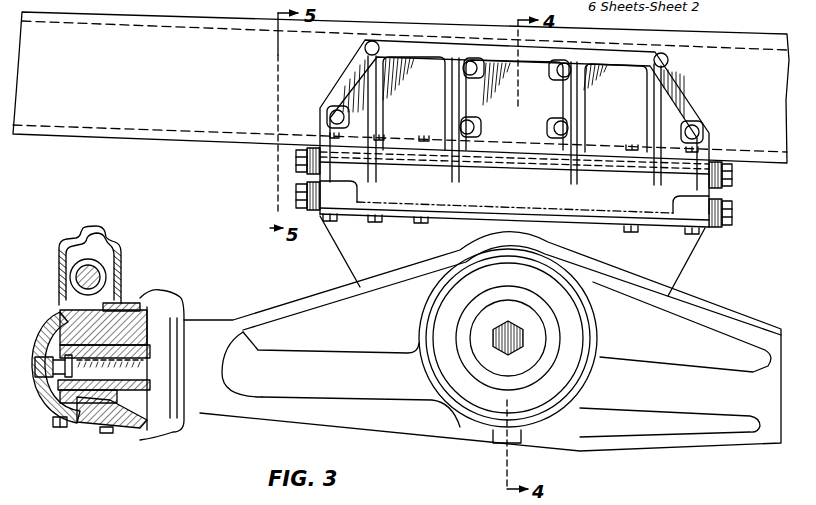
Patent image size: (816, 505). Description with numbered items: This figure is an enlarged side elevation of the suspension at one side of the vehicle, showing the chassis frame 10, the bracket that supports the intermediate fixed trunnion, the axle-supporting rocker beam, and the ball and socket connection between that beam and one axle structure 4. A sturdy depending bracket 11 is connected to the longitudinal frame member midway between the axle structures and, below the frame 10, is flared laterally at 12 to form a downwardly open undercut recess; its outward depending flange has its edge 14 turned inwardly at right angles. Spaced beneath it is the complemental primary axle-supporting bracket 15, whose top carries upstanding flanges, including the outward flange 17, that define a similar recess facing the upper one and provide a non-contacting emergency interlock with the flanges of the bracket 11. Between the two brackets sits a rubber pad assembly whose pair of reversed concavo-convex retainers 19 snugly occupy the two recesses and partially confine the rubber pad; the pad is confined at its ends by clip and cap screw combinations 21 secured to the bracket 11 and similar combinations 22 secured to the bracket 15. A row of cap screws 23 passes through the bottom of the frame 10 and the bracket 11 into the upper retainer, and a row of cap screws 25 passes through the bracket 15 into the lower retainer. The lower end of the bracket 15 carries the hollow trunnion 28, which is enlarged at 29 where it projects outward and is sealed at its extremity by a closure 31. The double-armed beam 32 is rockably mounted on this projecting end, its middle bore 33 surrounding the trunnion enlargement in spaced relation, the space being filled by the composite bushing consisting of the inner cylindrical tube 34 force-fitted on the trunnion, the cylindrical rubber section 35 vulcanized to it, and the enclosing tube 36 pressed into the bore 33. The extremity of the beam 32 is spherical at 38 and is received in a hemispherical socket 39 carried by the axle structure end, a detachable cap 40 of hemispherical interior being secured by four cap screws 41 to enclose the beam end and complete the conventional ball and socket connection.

The axle structure 4 is at (77, 233).
The frame 10 is at (401, 87).
The depending bracket 11 is at (692, 88).
The lateral flare 12 is at (522, 160).
The flanged edge 14 is at (494, 165).
The primary axle-supporting bracket 15 is at (340, 252).
The outward upwardly projecting flange 17 is at (403, 222).
The concavo-convex retainer 19 is at (408, 150).
The clip and cap screw combination 21 is at (296, 158).
The clip and cap screw combination 22 is at (297, 210).
The cap screw 23 is at (632, 146).
The cap screw 25 is at (633, 233).
The hollow trunnion 28 is at (557, 351).
The trunnion enlargement 29 is at (546, 366).
The closure 31 is at (545, 323).
The double-armed beam 32 is at (264, 310).
The middle bore 33 is at (580, 408).
The inner cylindrical tube 34 is at (455, 341).
The cylindrical rubber section 35 is at (456, 321).
The enclosing tube 36 is at (444, 293).
The spherical beam end 38 is at (55, 315).
The hemispherical socket 39 is at (124, 294).
The detachable cap 40 is at (82, 424).
The cap screw 41 is at (57, 428).